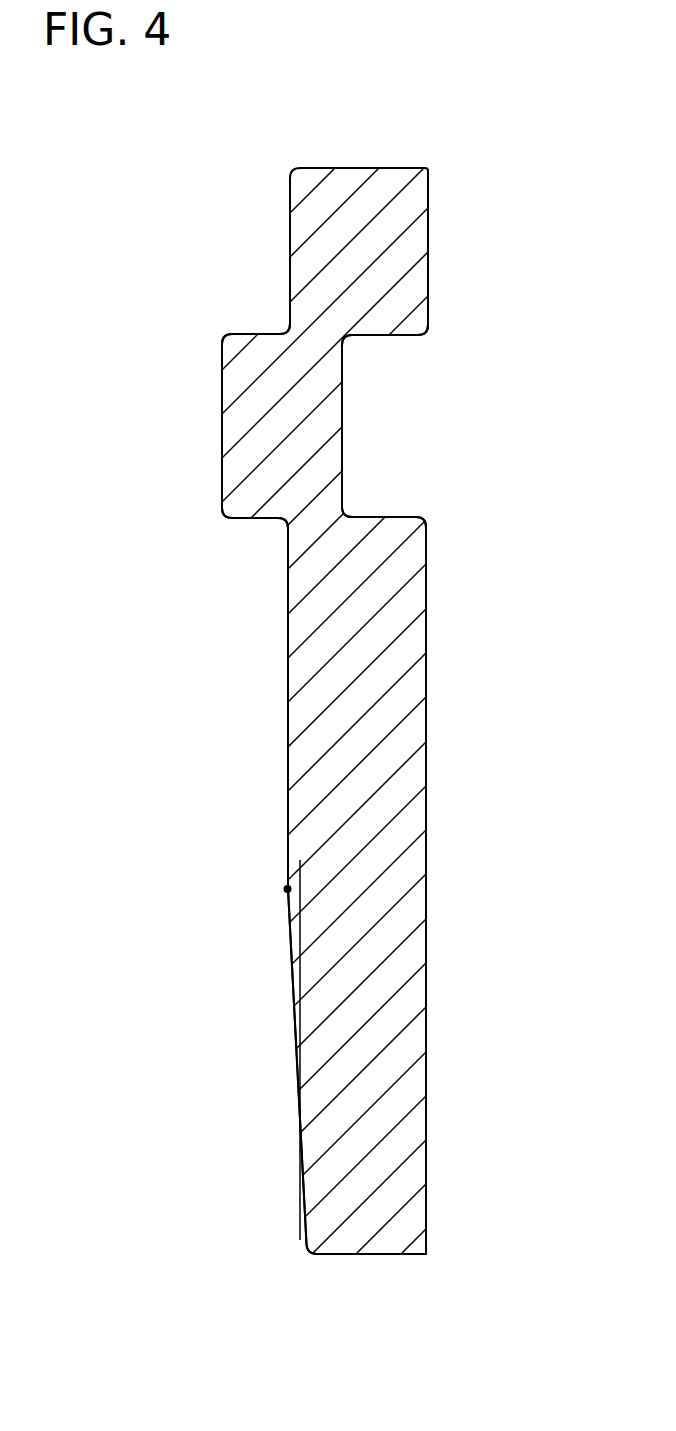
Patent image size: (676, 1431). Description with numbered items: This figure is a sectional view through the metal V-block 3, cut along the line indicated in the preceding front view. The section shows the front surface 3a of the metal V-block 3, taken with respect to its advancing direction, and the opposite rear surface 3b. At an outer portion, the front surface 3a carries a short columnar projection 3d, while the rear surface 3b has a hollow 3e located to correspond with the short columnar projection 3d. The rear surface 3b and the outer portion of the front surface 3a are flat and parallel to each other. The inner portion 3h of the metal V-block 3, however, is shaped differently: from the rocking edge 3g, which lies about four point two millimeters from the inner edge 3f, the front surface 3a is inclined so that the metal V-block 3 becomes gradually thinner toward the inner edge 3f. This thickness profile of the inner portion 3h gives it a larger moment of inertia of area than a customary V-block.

The metal V-block 3 is at (431, 156).
The front surface 3a is at (287, 722).
The rear surface 3b is at (427, 740).
The short columnar projection 3d is at (256, 411).
The hollow 3e is at (363, 435).
The inner edge 3f is at (306, 1251).
The rocking edge 3g is at (285, 891).
The inner portion 3h is at (383, 897).